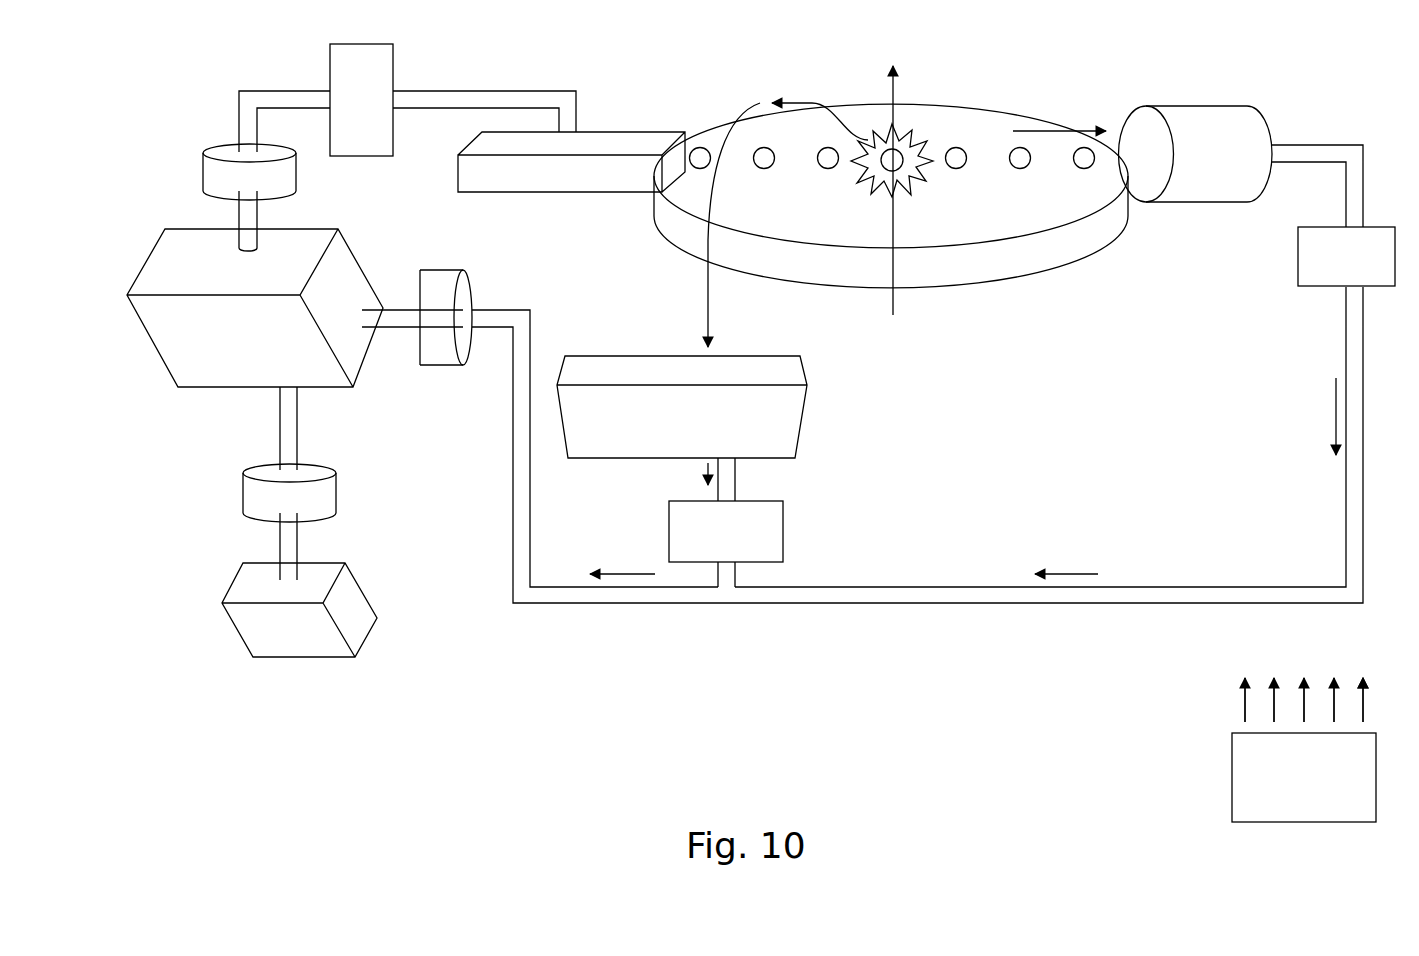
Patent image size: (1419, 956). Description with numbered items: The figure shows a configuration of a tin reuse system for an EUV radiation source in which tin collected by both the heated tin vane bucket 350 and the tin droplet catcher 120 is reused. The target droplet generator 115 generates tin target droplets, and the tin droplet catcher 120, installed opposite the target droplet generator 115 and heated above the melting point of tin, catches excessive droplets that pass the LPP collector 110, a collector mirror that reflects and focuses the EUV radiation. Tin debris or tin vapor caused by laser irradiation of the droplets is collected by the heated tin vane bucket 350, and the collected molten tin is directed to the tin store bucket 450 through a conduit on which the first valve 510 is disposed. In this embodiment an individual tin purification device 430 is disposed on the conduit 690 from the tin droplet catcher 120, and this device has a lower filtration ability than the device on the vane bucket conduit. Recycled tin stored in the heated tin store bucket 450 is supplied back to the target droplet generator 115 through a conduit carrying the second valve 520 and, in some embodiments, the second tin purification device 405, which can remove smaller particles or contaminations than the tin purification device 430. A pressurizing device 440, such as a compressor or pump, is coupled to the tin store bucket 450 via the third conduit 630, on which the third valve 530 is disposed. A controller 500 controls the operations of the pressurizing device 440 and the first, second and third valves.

The LPP collector 110 is at (1028, 263).
The target droplet generator 115 is at (632, 140).
The tin droplet catcher 120 is at (1203, 112).
The heated tin vane bucket 350 is at (795, 416).
The second tin purification device 405 is at (331, 60).
The tin purification device 430 is at (1300, 262).
The pressurizing device 440 is at (245, 583).
The tin store bucket 450 is at (148, 276).
The controller 500 is at (1328, 791).
The first valve 510 is at (444, 358).
The second valve 520 is at (208, 176).
The third valve 530 is at (246, 495).
The third conduit 630 is at (288, 431).
The conduit 690 is at (1350, 322).